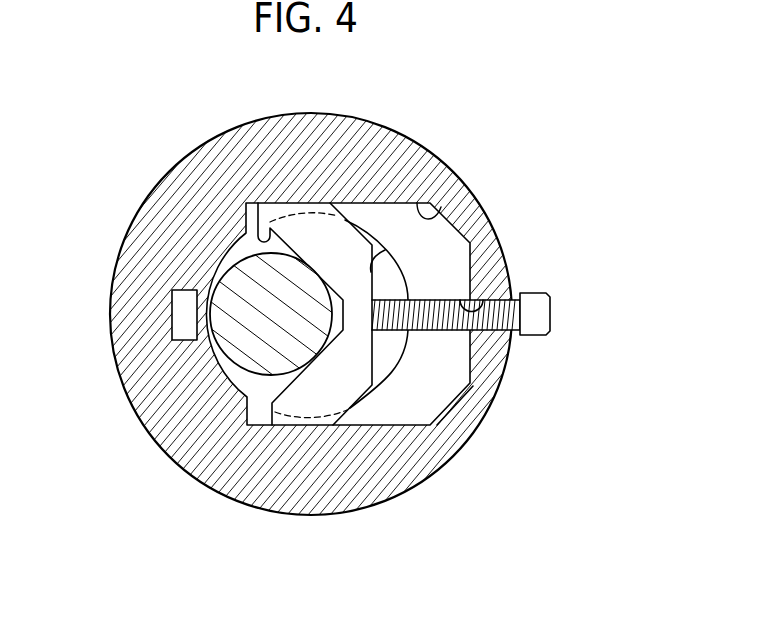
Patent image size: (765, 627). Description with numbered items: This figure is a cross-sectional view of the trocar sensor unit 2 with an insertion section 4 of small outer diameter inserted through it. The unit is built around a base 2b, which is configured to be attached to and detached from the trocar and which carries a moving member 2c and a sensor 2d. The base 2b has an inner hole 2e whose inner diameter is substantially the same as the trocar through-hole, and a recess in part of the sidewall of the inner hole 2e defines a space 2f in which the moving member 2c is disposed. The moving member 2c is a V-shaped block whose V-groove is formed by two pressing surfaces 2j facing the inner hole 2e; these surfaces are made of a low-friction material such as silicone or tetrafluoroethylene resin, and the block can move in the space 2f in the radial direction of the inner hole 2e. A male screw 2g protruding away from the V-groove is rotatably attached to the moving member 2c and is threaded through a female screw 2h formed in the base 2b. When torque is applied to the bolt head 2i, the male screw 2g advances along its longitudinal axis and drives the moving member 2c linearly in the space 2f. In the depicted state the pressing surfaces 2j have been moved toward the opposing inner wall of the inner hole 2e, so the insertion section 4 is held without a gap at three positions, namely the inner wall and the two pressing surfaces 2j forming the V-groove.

The trocar sensor unit 2 is at (548, 160).
The base 2b is at (457, 180).
The moving member 2c is at (384, 248).
The sensor 2d is at (172, 321).
The inner hole 2e is at (390, 377).
The space 2f is at (418, 203).
The male screw 2g is at (427, 300).
The female screw 2h is at (463, 300).
The bolt head 2i is at (531, 292).
The pressing surfaces 2j is at (263, 203).
The insertion section 4 is at (247, 257).